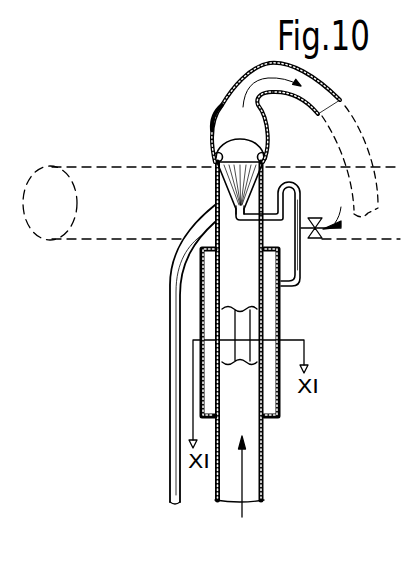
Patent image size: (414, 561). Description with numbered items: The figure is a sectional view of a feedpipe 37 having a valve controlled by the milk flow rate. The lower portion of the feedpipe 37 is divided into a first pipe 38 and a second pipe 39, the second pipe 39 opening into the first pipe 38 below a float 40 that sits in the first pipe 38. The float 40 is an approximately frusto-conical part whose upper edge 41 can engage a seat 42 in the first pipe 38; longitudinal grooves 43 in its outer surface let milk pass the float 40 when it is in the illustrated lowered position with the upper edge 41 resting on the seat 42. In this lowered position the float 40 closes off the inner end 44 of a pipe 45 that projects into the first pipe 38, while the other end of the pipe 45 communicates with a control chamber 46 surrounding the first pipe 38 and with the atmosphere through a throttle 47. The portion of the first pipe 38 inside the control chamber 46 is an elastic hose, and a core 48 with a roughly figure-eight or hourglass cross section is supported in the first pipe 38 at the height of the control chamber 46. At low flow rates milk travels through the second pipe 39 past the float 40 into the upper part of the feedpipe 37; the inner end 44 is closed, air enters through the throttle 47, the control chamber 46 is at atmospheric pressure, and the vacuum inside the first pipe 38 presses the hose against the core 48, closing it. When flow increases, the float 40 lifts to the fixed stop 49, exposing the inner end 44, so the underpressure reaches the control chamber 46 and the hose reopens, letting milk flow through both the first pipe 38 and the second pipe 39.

The feedpipe 37 is at (226, 74).
The first pipe 38 is at (253, 476).
The second pipe 39 is at (170, 418).
The float 40 is at (213, 128).
The upper edge 41 is at (268, 160).
The seat 42 is at (238, 155).
The grooves 43 is at (242, 183).
The inner end 44 is at (236, 213).
The pipe 45 is at (301, 205).
The control chamber 46 is at (283, 402).
The throttle 47 is at (320, 236).
The core 48 is at (242, 320).
The fixed stop 49 is at (238, 125).